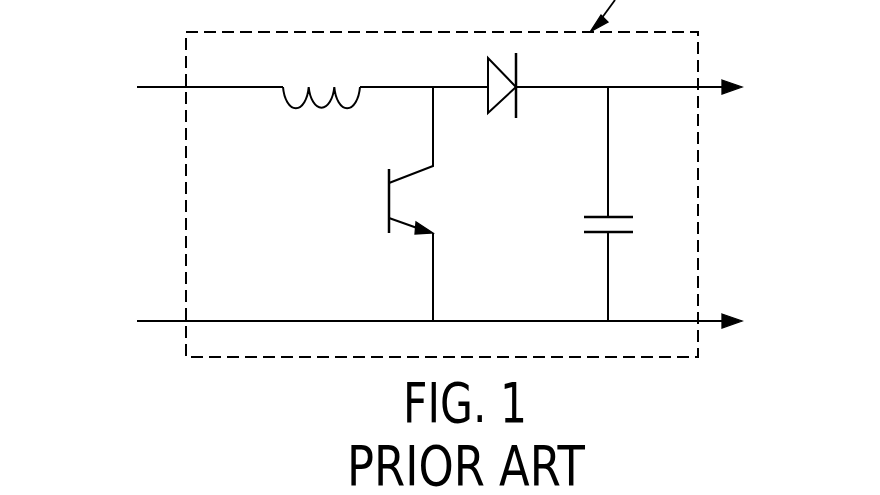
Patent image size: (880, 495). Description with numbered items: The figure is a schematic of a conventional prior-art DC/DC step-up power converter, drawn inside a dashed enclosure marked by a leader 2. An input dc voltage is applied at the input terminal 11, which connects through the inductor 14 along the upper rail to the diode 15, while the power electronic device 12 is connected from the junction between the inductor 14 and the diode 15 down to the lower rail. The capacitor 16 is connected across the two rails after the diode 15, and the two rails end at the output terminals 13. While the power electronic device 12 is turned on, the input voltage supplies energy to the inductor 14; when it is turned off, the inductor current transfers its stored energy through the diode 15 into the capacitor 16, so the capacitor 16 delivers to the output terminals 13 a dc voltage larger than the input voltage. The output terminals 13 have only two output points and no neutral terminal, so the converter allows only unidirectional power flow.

The voltage converter 2 is at (623, 494).
The input terminal 11 is at (170, 195).
The power electronic device 12 is at (394, 204).
The output terminals 13 is at (708, 177).
The inductor 14 is at (321, 80).
The diode 15 is at (615, 83).
The capacitor 16 is at (637, 260).